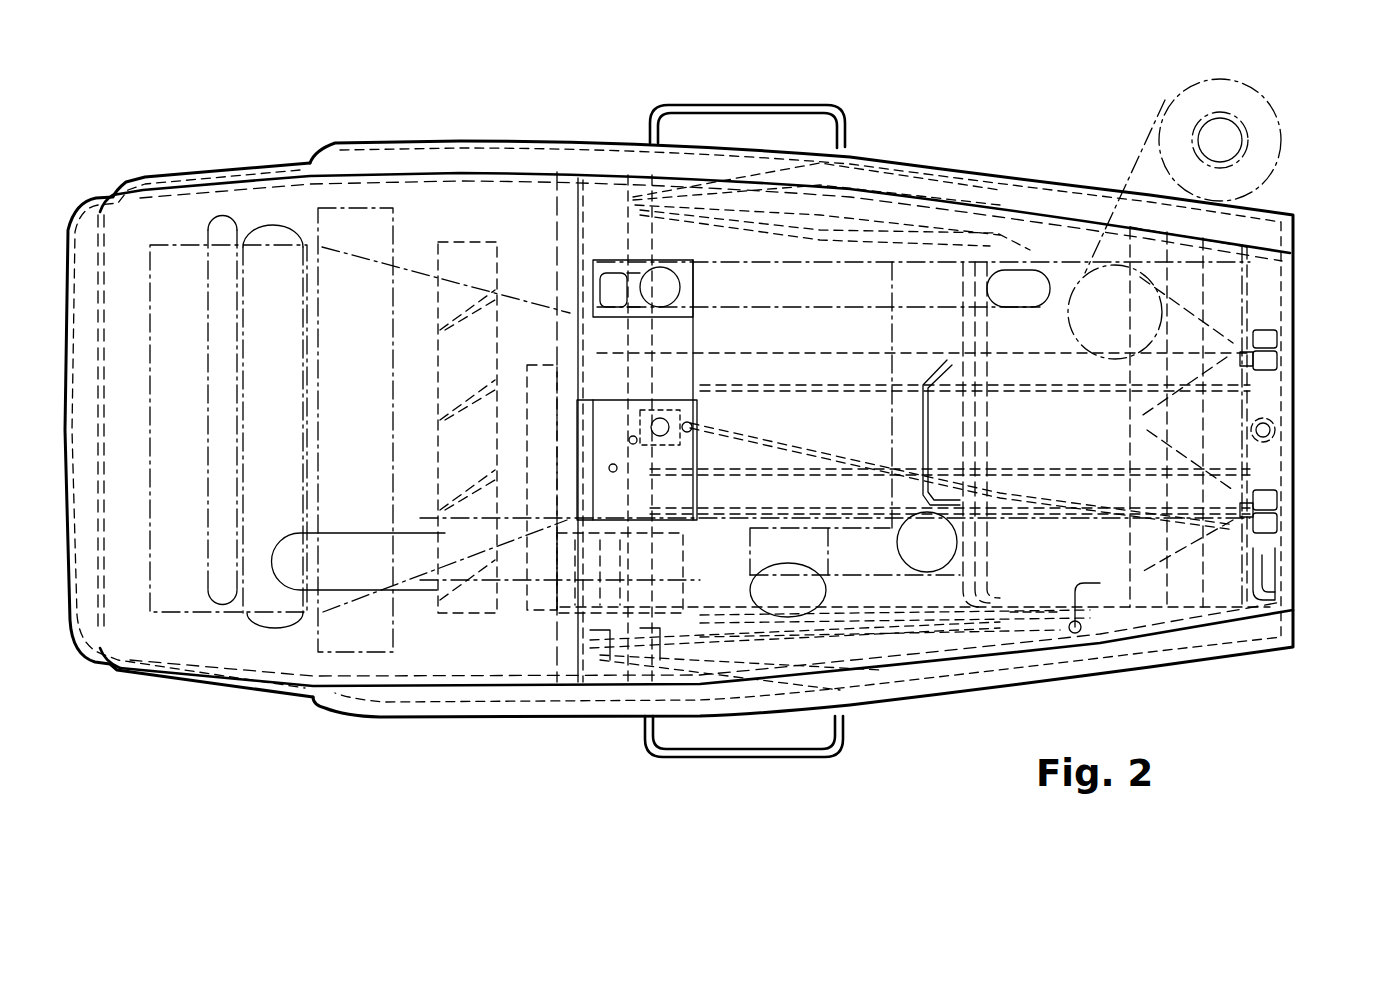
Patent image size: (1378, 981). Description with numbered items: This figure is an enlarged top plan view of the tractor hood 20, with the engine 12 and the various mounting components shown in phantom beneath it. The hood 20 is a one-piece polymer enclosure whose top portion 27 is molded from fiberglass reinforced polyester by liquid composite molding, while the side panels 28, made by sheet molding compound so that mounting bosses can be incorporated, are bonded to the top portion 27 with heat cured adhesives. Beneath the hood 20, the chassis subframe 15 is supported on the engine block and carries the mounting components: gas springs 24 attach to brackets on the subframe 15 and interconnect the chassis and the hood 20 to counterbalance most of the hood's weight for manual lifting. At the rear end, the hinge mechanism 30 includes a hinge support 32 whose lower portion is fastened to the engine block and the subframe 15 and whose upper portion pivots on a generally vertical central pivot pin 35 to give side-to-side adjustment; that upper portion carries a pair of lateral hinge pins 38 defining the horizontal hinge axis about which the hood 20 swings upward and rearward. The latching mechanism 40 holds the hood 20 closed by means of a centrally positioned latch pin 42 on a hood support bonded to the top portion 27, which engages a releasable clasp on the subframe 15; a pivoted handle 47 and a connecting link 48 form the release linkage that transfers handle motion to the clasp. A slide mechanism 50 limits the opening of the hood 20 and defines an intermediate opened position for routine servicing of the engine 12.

The hood 20 is at (200, 88).
The top portion 27 is at (430, 215).
The side panels 28 is at (468, 138).
The chassis subframe 15 is at (580, 235).
The gas springs 24 is at (930, 223).
The engine 12 is at (440, 415).
The latch pin 42 is at (610, 420).
The connecting link 48 is at (776, 445).
The hinge mechanism 30 is at (1302, 356).
The hinge pins 38 is at (1265, 328).
The hinge support 32 is at (1273, 398).
The central pivot pin 35 is at (1266, 435).
The latching mechanism 40 is at (1300, 591).
The pivoted handle 47 is at (1085, 632).
The slide mechanism 50 is at (887, 636).